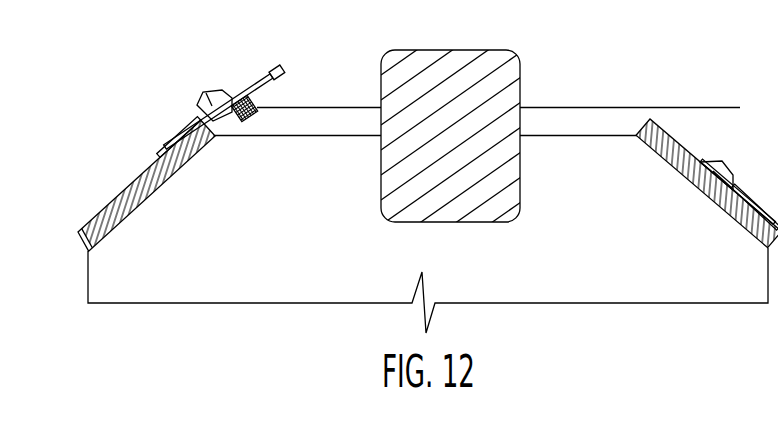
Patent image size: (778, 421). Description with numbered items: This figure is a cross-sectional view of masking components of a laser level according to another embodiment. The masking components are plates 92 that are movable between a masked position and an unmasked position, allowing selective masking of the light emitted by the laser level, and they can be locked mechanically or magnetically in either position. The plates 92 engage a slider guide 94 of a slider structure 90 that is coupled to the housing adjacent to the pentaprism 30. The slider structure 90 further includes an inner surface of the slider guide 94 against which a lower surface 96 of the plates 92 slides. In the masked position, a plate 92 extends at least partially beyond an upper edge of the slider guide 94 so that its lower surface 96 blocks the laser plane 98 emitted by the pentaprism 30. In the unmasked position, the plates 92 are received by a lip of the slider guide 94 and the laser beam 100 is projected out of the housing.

The slider structure 90 is at (103, 129).
The plates 92 is at (230, 61).
The slider guide 94 is at (103, 210).
The lower surface 96 is at (283, 81).
The laser plane 98 is at (344, 107).
The laser beam 100 is at (612, 107).
The pentaprism 30 is at (478, 60).